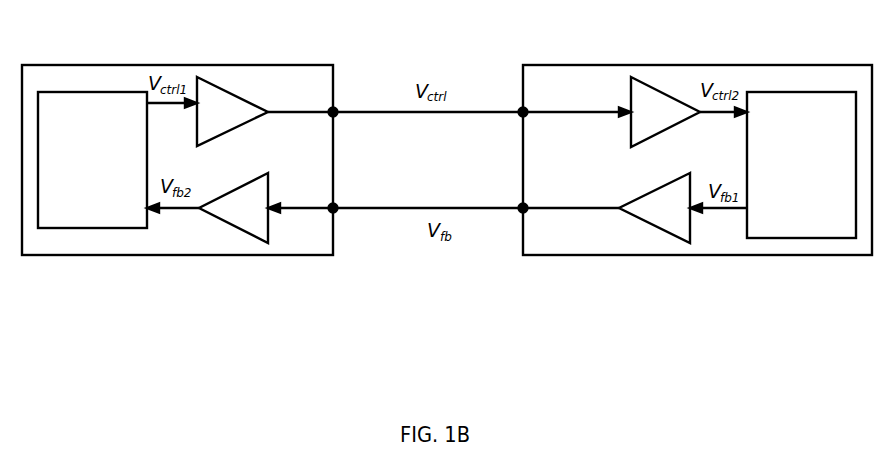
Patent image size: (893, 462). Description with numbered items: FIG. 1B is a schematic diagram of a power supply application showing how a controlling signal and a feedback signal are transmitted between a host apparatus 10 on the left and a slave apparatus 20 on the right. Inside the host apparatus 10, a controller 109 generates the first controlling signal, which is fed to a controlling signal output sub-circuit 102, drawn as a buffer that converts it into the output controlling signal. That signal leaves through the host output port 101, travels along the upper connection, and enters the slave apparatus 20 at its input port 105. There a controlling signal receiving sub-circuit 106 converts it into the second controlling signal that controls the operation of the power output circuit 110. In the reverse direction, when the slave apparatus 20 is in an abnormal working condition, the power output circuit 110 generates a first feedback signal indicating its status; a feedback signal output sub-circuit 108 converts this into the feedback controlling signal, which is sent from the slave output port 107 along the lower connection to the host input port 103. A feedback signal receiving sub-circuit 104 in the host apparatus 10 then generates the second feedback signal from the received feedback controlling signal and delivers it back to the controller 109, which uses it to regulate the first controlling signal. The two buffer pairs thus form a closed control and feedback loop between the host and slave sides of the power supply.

The host apparatus 10 is at (45, 78).
The slave apparatus 20 is at (558, 77).
The controller 109 is at (107, 186).
The controlling signal output sub-circuit 102 is at (236, 122).
The feedback signal receiving sub-circuit 104 is at (263, 221).
The controlling signal receiving sub-circuit 106 is at (671, 121).
The feedback signal output sub-circuit 108 is at (685, 221).
The power output circuit 110 is at (848, 203).
The output port 101 is at (350, 101).
The input port 103 is at (350, 197).
The input port 105 is at (504, 101).
The output port 107 is at (504, 197).